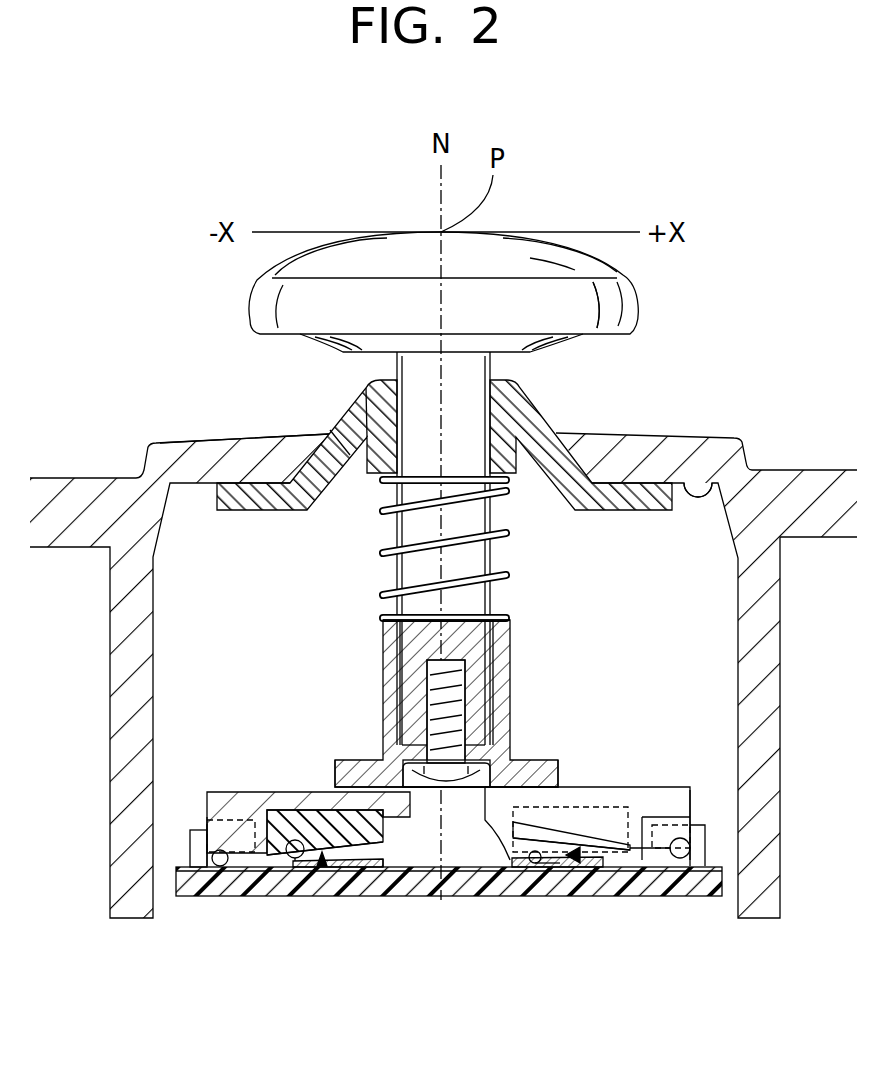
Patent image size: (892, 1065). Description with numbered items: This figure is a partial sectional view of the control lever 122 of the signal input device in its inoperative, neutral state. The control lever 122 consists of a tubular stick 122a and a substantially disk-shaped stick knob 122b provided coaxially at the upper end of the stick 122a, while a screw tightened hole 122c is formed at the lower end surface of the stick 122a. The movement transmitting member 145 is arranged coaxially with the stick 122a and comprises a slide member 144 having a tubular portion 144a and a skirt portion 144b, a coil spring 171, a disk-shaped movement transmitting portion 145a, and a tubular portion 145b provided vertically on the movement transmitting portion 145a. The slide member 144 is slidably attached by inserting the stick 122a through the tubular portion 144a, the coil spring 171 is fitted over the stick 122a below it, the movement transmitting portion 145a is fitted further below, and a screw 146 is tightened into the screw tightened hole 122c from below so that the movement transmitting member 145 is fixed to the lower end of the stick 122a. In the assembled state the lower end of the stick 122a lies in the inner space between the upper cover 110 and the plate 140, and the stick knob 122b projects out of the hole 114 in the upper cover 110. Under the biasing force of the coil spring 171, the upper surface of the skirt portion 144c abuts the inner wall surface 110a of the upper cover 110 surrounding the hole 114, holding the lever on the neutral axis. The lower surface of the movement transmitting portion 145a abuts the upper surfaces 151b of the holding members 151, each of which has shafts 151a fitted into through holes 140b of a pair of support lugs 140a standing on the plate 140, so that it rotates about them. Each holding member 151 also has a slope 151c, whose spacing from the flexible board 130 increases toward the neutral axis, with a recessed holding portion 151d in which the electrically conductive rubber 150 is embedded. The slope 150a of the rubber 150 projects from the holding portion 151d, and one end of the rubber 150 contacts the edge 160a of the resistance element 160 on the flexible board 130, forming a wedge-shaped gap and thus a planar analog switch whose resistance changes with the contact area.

The upper cover 110 is at (138, 430).
The inner wall surface 110a is at (717, 480).
The hole 114 is at (315, 455).
The control lever 122 is at (592, 240).
The stick 122a is at (505, 380).
The stick knob 122b is at (615, 300).
The screw tightened hole 122c is at (496, 682).
The flexible board 130 is at (424, 897).
The plate 140 is at (516, 871).
The support lug 140a is at (200, 830).
The through hole 140b is at (731, 880).
The slide member 144 is at (471, 476).
The tubular portion 144a is at (520, 465).
The skirt portion 144b is at (562, 490).
The skirt portion 144c is at (628, 512).
The movement transmitting member 145 is at (457, 697).
The movement transmitting portion 145a is at (553, 777).
The tubular portion 145b is at (383, 642).
The screw 146 is at (458, 790).
The electrically conductive rubber 150 is at (327, 868).
The slope 150a is at (362, 870).
The holding member 151 is at (503, 824).
The shaft 151a is at (207, 870).
The upper surface 151b is at (288, 806).
The slope 151c is at (390, 862).
The holding portion 151d is at (320, 830).
The resistance element 160 is at (297, 860).
The edge 160a is at (293, 862).
The coil spring 171 is at (380, 553).